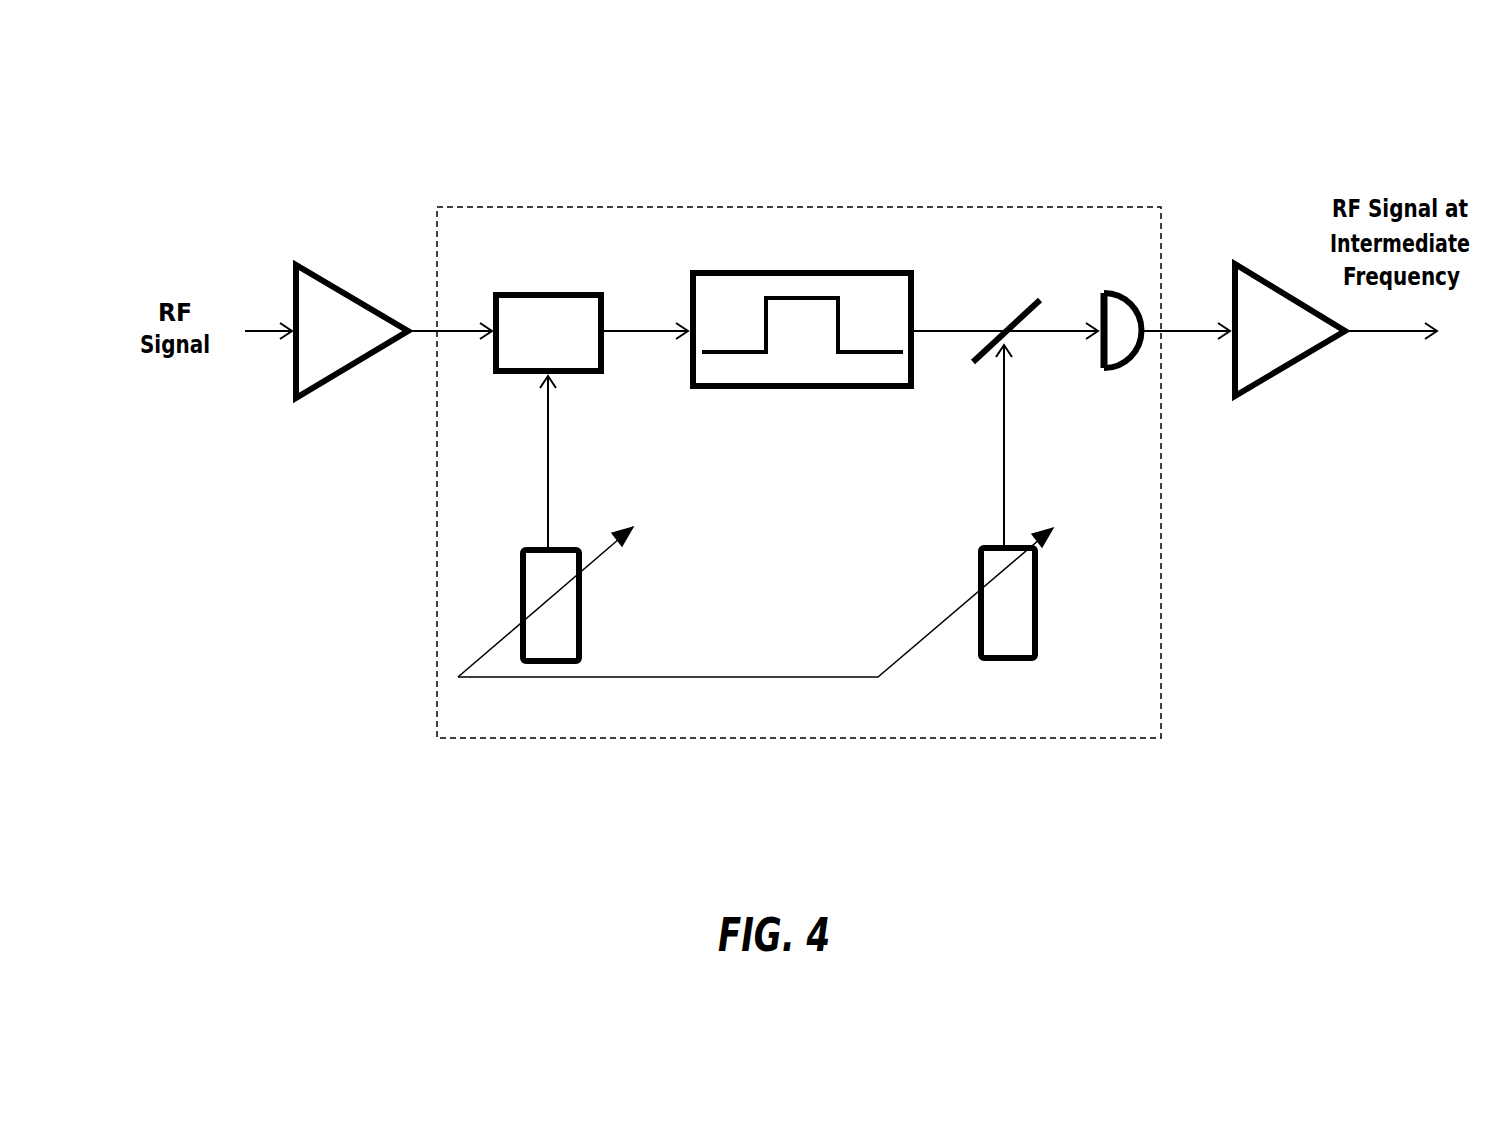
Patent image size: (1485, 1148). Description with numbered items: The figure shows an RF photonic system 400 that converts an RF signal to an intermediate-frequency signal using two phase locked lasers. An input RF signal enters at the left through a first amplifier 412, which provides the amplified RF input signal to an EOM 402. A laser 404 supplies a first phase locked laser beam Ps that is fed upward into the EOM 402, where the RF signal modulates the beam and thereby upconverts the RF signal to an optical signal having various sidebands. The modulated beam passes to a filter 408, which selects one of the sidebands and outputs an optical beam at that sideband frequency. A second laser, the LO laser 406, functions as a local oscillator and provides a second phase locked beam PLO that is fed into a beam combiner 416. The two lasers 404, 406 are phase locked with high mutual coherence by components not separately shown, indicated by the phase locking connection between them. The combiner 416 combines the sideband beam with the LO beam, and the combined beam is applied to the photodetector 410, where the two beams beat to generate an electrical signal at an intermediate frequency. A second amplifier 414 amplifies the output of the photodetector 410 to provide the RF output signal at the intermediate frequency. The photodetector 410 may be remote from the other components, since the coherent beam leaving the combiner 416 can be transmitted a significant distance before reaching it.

The RF photonic system 400 is at (162, 125).
The EOM 402 is at (568, 375).
The laser 404 is at (578, 640).
The LO laser 406 is at (1000, 662).
The filter 408 is at (830, 390).
The photodetector 410 is at (1103, 370).
The first amplifier 412 is at (322, 388).
The second amplifier 414 is at (1297, 358).
The beam combiner 416 is at (1028, 303).